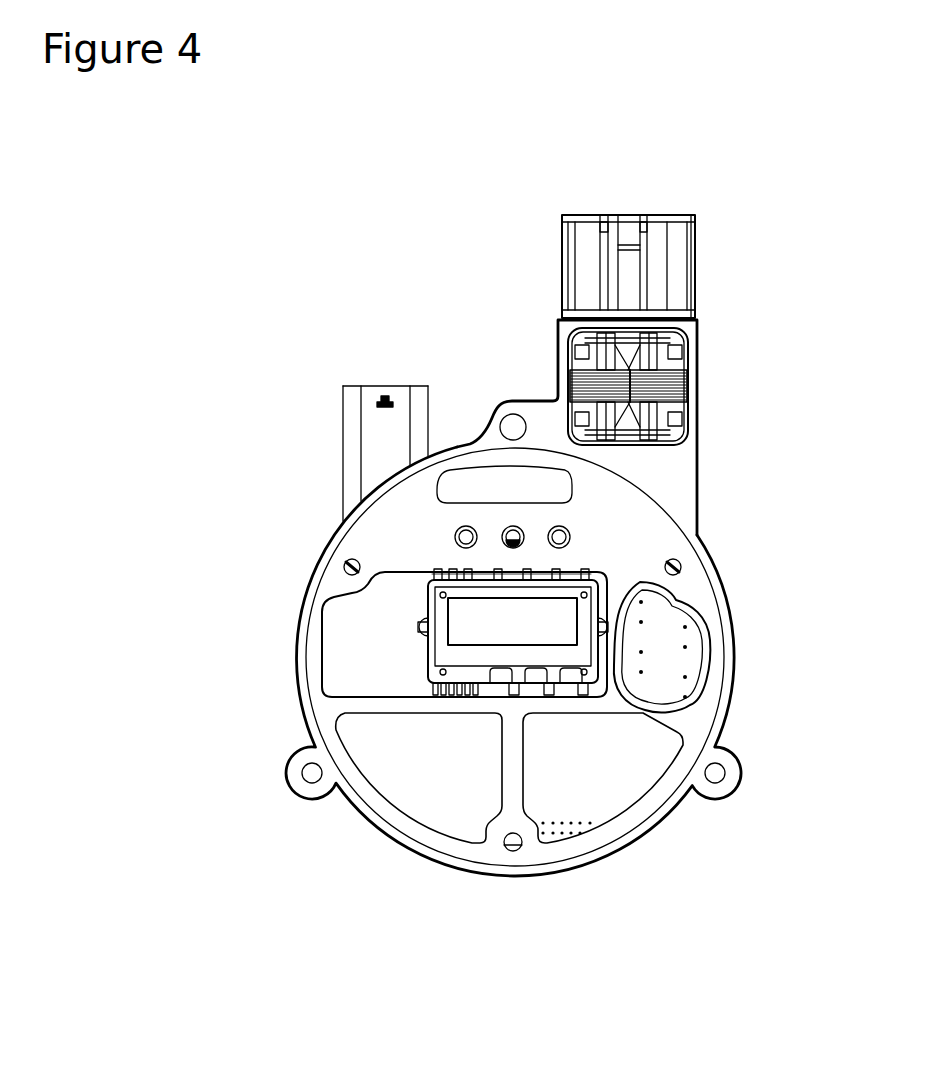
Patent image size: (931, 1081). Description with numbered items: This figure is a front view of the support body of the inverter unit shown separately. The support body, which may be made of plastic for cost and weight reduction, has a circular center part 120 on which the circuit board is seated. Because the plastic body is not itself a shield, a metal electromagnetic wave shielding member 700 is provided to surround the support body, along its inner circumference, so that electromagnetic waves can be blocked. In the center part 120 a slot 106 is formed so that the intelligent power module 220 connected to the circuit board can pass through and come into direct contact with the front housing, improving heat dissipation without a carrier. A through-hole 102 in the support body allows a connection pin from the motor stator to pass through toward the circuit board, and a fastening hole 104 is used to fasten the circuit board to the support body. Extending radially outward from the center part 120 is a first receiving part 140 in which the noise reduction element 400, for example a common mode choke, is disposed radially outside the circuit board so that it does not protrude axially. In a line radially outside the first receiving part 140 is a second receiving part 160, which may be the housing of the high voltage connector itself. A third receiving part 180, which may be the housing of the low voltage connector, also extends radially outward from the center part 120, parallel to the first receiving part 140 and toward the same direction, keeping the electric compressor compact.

The through-hole 102 is at (568, 535).
The fastening hole 104 is at (347, 567).
The slot 106 is at (352, 626).
The center part 120 is at (708, 662).
The first receiving part 140 is at (697, 468).
The second receiving part 160 is at (697, 255).
The third receiving part 180 is at (427, 402).
The intelligent power module 220 is at (467, 676).
The noise reduction element 400 is at (692, 383).
The electromagnetic wave shielding member 700 is at (720, 729).